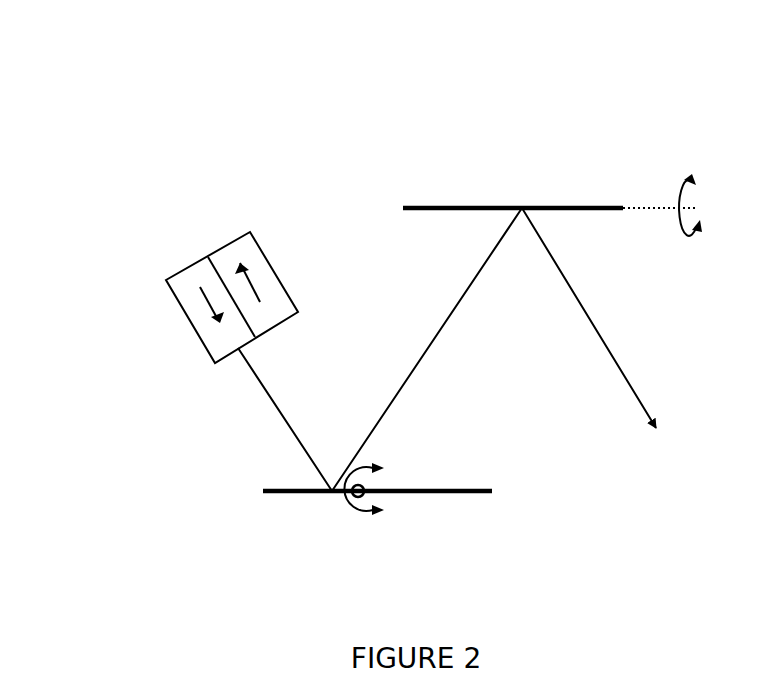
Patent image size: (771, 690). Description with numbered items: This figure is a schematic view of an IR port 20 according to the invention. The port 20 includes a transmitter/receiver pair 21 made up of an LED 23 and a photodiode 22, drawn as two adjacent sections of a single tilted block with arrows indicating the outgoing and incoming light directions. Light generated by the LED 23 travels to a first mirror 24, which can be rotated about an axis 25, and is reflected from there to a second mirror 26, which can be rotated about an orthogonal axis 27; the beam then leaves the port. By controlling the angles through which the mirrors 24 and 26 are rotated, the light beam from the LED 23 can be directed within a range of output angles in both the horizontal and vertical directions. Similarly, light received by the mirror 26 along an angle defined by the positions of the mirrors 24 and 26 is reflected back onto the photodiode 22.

The IR port 20 is at (138, 116).
The transmitter/receiver pair 21 is at (260, 240).
The photodiode 22 is at (238, 248).
The LED 23 is at (182, 280).
The first mirror 24 is at (273, 497).
The axis 25 is at (350, 512).
The second mirror 26 is at (475, 208).
The orthogonal axis 27 is at (638, 208).